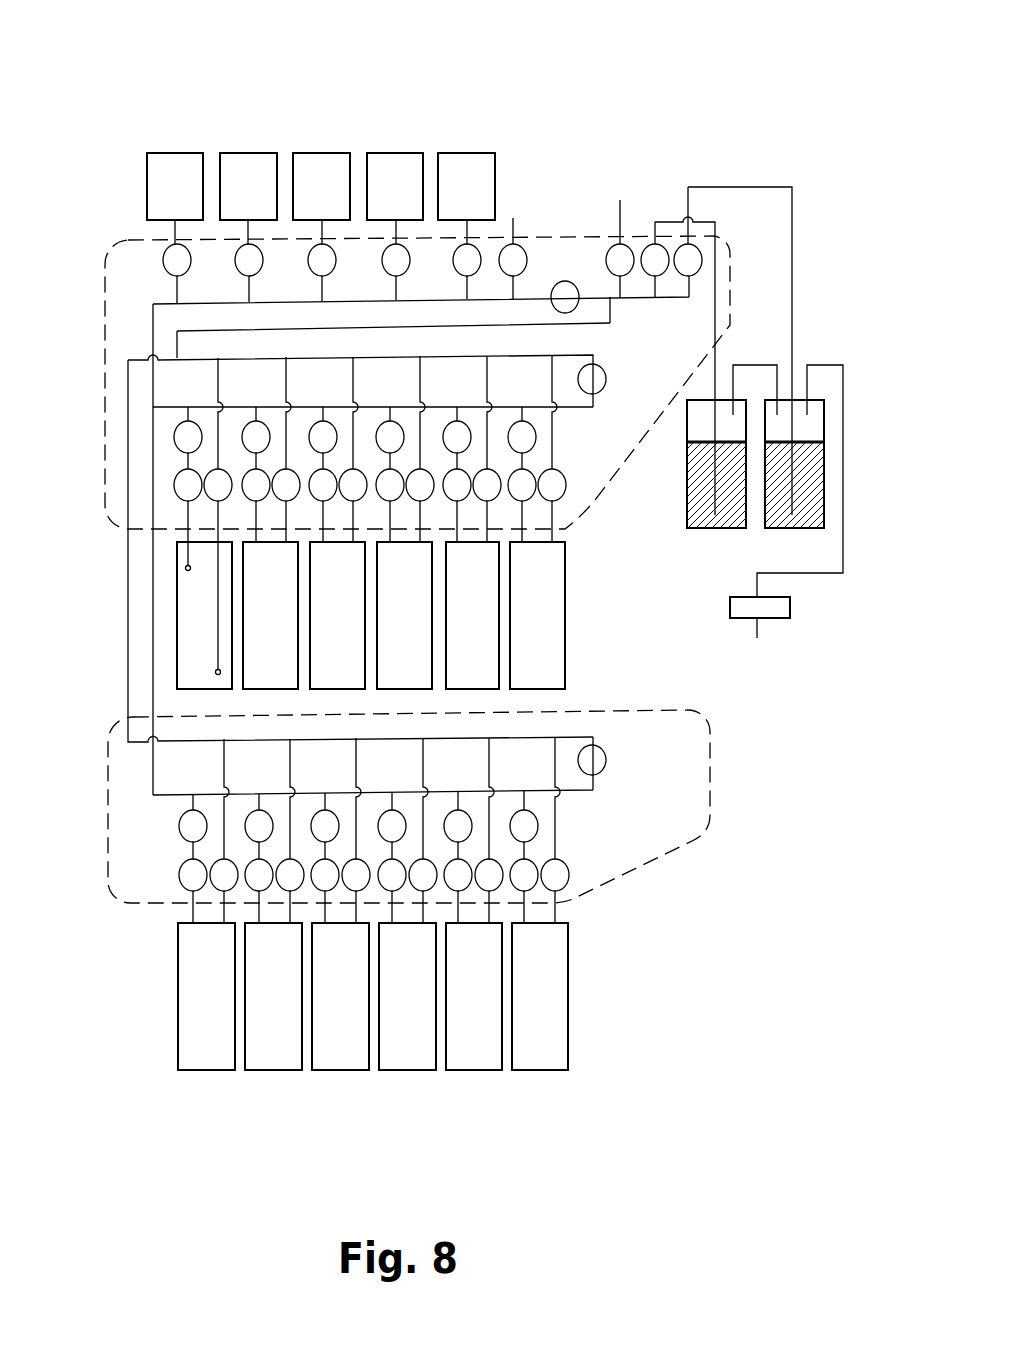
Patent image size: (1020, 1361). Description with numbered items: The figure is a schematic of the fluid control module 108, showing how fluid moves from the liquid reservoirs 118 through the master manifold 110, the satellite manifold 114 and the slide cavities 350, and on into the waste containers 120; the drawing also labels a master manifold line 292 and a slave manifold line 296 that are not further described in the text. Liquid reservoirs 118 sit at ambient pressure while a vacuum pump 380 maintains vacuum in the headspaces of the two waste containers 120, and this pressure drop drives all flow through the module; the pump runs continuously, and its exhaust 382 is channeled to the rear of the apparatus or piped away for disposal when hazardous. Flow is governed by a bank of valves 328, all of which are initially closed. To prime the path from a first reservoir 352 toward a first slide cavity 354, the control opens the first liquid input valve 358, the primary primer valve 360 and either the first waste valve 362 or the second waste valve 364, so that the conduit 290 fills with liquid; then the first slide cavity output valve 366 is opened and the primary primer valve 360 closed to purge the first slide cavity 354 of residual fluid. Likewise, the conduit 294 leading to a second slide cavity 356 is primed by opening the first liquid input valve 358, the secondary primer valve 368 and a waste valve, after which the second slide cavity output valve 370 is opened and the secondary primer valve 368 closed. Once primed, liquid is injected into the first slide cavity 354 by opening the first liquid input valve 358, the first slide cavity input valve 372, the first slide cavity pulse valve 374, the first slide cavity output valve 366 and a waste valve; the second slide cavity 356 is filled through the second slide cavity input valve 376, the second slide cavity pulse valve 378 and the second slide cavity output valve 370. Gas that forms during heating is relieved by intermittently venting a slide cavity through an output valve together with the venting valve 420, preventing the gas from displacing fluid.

The fluid control module 108 is at (767, 82).
The master manifold 110 is at (147, 242).
The satellite manifold 114 is at (112, 742).
The liquid reservoirs 118 is at (460, 147).
The waste containers 120 is at (687, 508).
The conduit 290 is at (150, 316).
The master manifold 292 is at (497, 327).
The conduit 294 is at (153, 774).
The slave manifold 296 is at (548, 735).
The valves 328 is at (157, 252).
The slide cavities 350 is at (173, 592).
The first reservoir 352 is at (175, 153).
The first slide cavity 354 is at (190, 652).
The second slide cavity 356 is at (200, 1042).
The first liquid input valve 358 is at (160, 265).
The primary primer valve 360 is at (600, 387).
The first waste valve 362 is at (657, 240).
The second waste valve 364 is at (695, 240).
The first slide cavity output valve 366 is at (210, 497).
The secondary primer valve 368 is at (602, 772).
The second slide cavity output valve 370 is at (213, 888).
The first slide cavity input valve 372 is at (177, 433).
The first slide cavity pulse valve 374 is at (175, 488).
The second slide cavity input valve 376 is at (178, 827).
The second slide cavity pulse valve 378 is at (178, 875).
The vacuum pump 380 is at (730, 605).
The exhaust 382 is at (727, 652).
The venting valve 420 is at (610, 240).